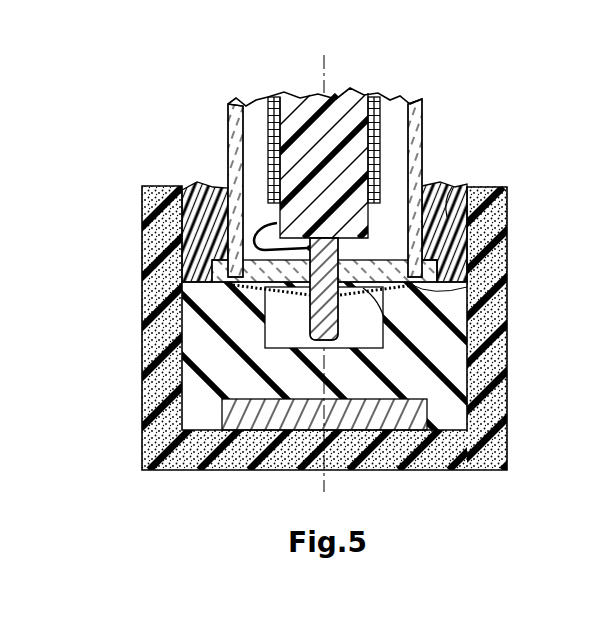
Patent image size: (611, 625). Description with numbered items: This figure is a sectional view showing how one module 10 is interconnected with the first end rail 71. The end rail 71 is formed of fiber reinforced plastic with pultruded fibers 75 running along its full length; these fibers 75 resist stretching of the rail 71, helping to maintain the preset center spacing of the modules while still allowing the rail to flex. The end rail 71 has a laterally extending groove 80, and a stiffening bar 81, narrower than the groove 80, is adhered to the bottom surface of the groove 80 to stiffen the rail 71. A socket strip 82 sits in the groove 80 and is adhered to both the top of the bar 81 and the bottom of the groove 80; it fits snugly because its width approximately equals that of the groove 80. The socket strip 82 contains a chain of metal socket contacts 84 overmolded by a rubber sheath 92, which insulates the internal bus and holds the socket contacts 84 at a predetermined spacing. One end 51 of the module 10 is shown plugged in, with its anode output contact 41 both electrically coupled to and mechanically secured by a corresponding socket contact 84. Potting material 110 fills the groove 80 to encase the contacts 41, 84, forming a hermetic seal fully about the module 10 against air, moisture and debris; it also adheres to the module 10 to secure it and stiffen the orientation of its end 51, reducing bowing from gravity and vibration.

The module 10 is at (425, 109).
The groove 80 is at (437, 188).
The potting material 110 is at (447, 218).
The pultruded fibers 75 is at (468, 255).
The end of the cell 51 is at (467, 282).
The rubber sheath 92 is at (468, 292).
The socket contact 84 is at (386, 322).
The socket strip 82 is at (472, 348).
The stiffening bar 81 is at (414, 410).
The first end rail 71 is at (503, 458).
The anode output contact 41 is at (330, 322).